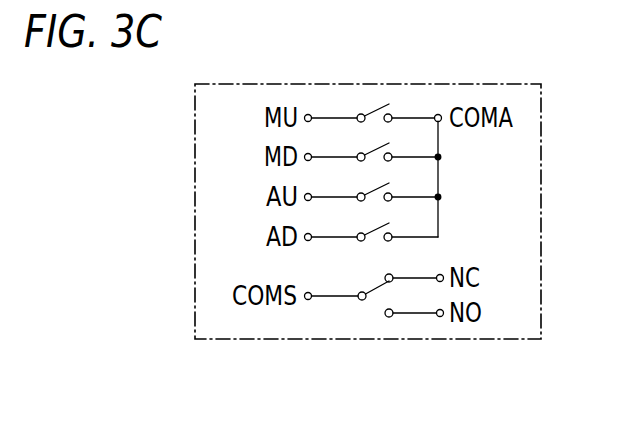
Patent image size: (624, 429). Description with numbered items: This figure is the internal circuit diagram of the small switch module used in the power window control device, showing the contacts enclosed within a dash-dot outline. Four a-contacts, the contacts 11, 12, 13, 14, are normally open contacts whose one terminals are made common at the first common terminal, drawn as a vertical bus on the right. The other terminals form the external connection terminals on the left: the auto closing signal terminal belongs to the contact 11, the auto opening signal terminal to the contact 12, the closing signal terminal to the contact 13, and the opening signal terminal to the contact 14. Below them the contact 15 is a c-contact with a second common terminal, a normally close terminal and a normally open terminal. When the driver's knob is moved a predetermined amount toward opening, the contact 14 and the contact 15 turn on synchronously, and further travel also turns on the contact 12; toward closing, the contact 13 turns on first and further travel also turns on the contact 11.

The contact 11 is at (392, 186).
The contact 12 is at (392, 227).
The contact 13 is at (378, 104).
The contact 14 is at (367, 153).
The contact 15 is at (375, 297).